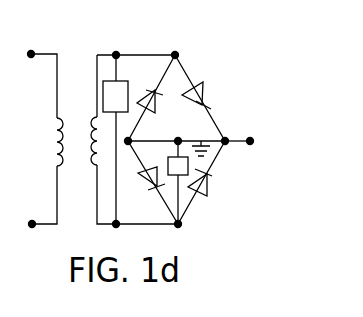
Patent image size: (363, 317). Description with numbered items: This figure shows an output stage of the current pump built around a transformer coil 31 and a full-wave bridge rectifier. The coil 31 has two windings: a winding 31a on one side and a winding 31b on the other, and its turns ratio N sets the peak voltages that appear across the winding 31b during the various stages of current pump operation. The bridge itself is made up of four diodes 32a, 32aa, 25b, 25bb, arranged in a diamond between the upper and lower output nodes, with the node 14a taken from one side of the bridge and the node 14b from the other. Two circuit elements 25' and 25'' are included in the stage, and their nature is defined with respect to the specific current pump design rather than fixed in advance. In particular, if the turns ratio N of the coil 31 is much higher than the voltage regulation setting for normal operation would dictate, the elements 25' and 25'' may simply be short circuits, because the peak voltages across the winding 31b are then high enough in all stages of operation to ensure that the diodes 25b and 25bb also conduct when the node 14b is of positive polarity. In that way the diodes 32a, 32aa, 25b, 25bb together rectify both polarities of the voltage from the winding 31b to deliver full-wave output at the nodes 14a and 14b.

The coil 31 is at (60, 139).
The coil winding 31a is at (48, 142).
The coil winding 31b is at (102, 141).
The circuit element 25' is at (123, 120).
The circuit element 25'' is at (178, 169).
The diode 32aa is at (152, 92).
The diode 32a is at (212, 90).
The diode 25bb is at (147, 181).
The diode 25b is at (210, 190).
The node 14a is at (249, 131).
The node 14b is at (181, 226).